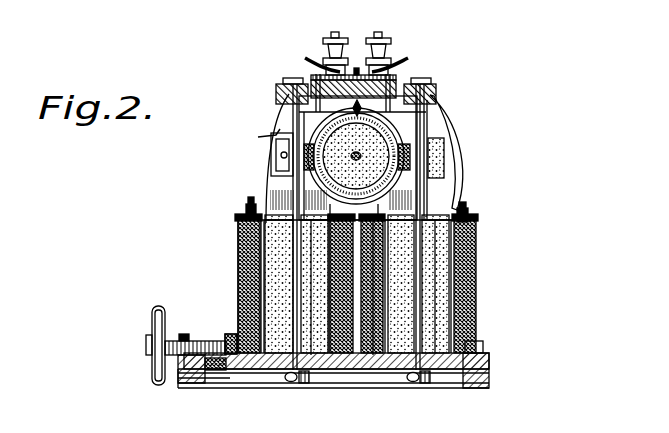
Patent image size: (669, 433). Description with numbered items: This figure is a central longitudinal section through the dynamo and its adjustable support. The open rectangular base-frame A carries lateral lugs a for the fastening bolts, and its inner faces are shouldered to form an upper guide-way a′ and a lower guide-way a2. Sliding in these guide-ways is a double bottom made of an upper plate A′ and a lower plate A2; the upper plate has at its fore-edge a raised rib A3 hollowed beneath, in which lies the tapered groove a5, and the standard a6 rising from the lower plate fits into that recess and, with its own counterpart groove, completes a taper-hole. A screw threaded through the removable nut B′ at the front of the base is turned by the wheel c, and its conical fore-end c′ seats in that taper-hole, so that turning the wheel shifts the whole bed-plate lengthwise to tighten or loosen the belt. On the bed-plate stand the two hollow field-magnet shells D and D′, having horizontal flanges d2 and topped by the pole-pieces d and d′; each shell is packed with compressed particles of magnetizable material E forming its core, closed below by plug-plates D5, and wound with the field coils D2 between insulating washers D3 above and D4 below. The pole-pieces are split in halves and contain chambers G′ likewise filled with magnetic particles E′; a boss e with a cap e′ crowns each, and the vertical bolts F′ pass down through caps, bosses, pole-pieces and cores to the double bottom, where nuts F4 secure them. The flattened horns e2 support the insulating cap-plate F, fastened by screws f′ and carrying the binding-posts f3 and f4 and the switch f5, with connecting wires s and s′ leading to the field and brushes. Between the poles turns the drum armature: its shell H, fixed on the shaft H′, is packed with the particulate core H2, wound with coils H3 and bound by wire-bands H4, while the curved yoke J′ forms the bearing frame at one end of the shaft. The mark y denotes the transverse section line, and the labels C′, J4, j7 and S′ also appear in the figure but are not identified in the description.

The base-frame A is at (470, 372).
The upper plate A′ is at (475, 350).
The lower plate A2 is at (338, 362).
The transverse raised rib A3 is at (222, 328).
The lateral lugs a is at (454, 427).
The upper guide-way a′ is at (160, 376).
The lower guide-way a2 is at (187, 376).
The central groove a5 is at (221, 330).
The upright projection a6 is at (207, 376).
The removable nut B′ is at (176, 326).
The cell casing edge C′ is at (231, 268).
The manipulating wheel c is at (148, 345).
The conical formation c′ is at (197, 326).
The field-magnet shell D is at (228, 232).
The field-magnet shell D′ is at (470, 283).
The field-magnet coils D2 is at (228, 238).
The insulating washer D3 is at (467, 215).
The insulating washer D4 is at (365, 347).
The plug-plate D5 is at (303, 347).
The pole-piece d is at (262, 170).
The pole-piece d′ is at (428, 183).
The horizontal flange d2 is at (460, 207).
The magnetizable core filling E is at (468, 268).
The pole-chamber filling E′ is at (436, 143).
The boss e is at (420, 93).
The cap e′ is at (428, 90).
The horns e2 is at (389, 76).
The cap-plate F is at (283, 72).
The vertical bolt F′ is at (240, 198).
The nut F4 is at (287, 362).
The screw f′ is at (400, 118).
The binding-post f3 is at (318, 48).
The binding-post f4 is at (385, 48).
The switch device f5 is at (349, 60).
The pole-chamber G′ is at (258, 152).
The armature shell H is at (262, 115).
The armature-shaft H′ is at (440, 125).
The armature-core H2 is at (238, 206).
The armature coils H3 is at (277, 104).
The wire-bands H4 is at (470, 235).
The curved yoke J′ is at (440, 172).
The foot J4 is at (433, 381).
The pin j7 is at (497, 428).
The spring S′ is at (137, 198).
The connecting wire s is at (296, 50).
The connecting wire s′ is at (402, 51).
The section line y is at (213, 388).